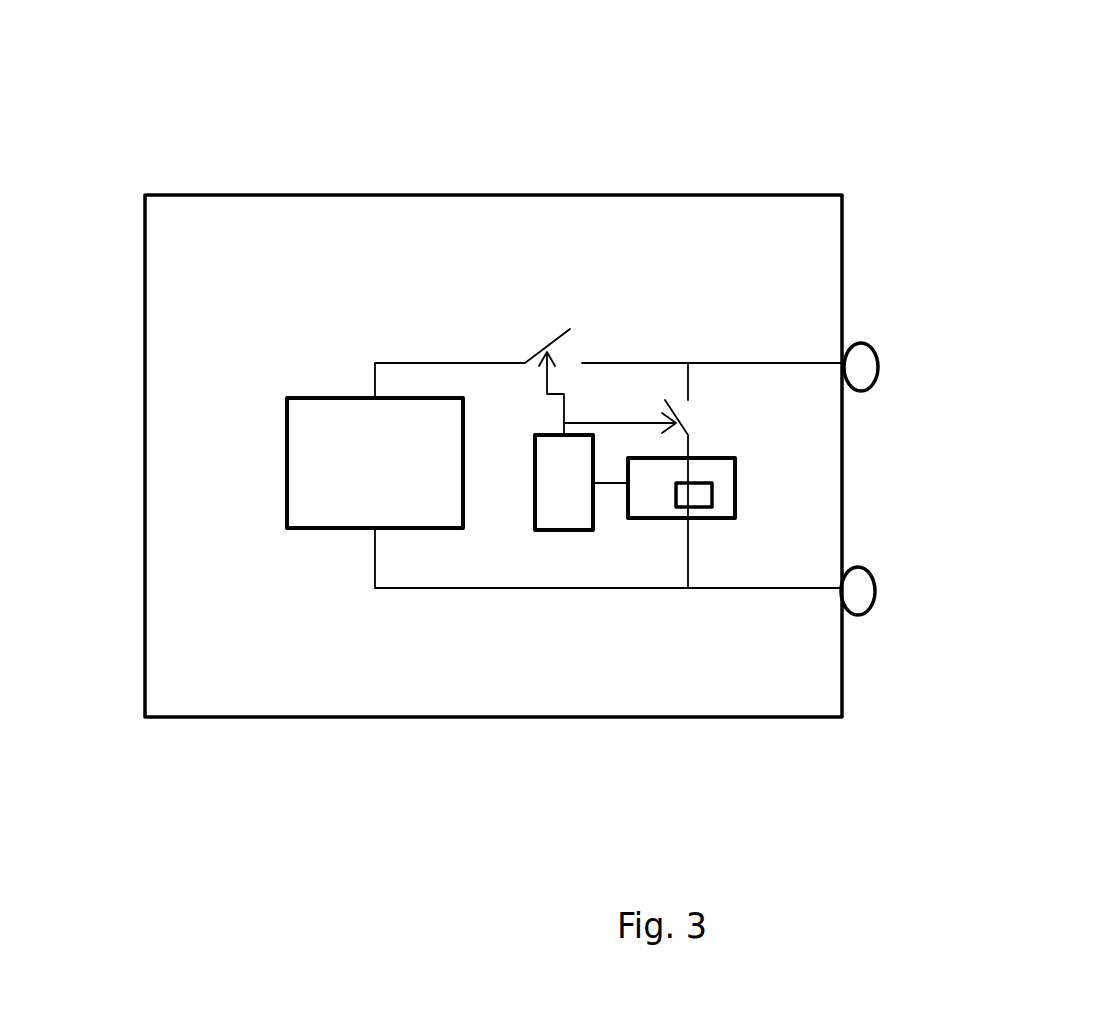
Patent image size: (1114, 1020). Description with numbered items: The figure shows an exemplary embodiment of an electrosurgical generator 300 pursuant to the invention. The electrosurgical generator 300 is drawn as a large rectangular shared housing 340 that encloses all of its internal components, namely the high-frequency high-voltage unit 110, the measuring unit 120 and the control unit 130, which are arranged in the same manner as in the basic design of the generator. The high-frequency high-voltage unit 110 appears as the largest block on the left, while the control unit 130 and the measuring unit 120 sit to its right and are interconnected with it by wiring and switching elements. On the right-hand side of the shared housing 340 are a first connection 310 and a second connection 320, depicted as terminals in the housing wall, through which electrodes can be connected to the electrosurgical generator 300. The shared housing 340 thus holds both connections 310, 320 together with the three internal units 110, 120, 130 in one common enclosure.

The electrosurgical generator 300 is at (970, 205).
The high-frequency high-voltage unit 110 is at (333, 468).
The measuring unit 120 is at (727, 503).
The control unit 130 is at (570, 503).
The first connection 310 is at (867, 369).
The second connection 320 is at (865, 592).
The shared housing 340 is at (842, 702).